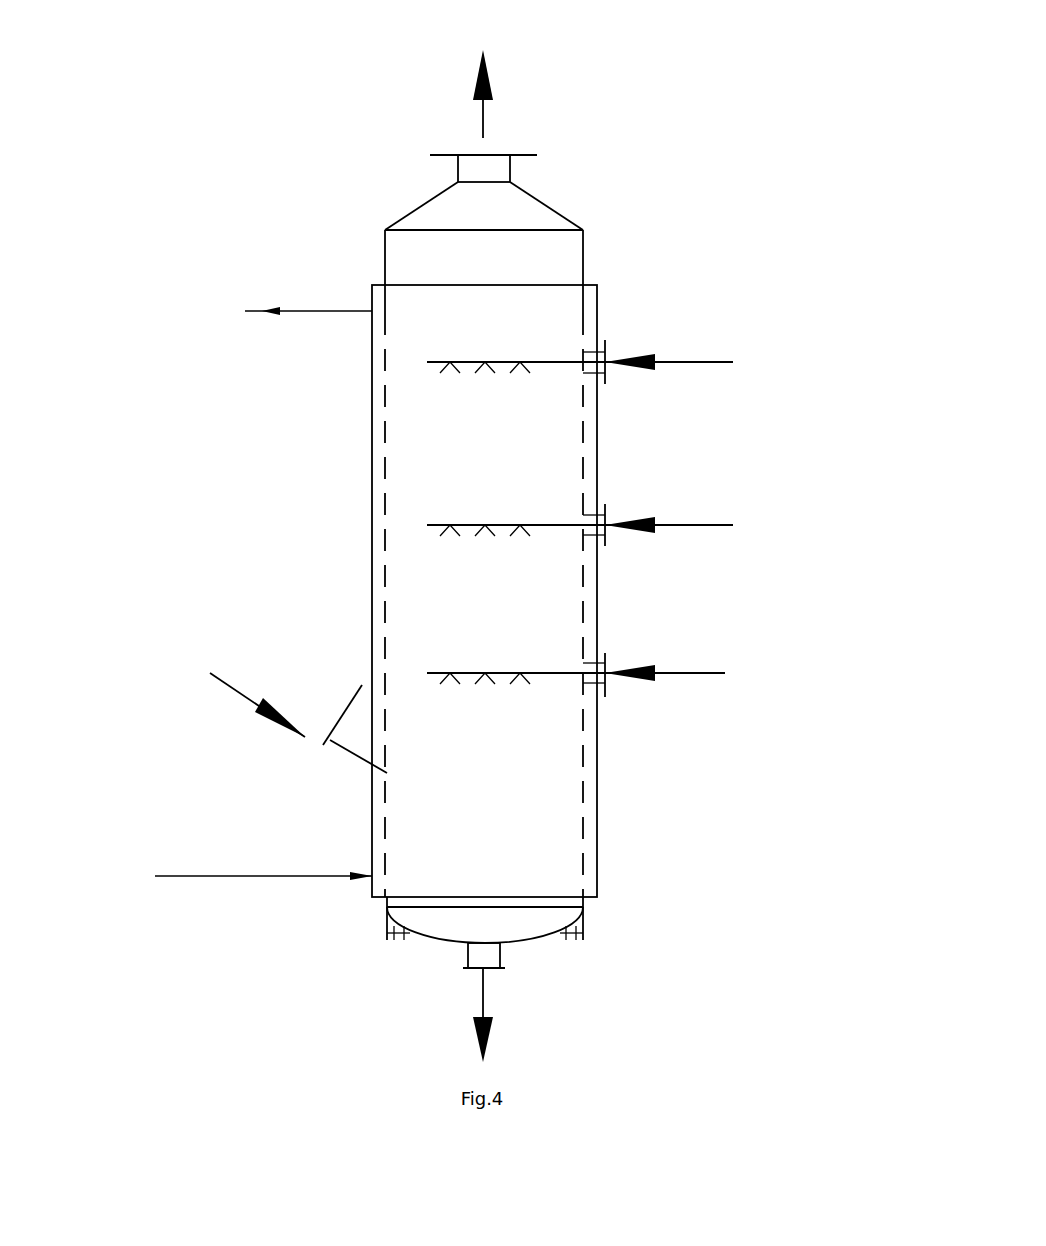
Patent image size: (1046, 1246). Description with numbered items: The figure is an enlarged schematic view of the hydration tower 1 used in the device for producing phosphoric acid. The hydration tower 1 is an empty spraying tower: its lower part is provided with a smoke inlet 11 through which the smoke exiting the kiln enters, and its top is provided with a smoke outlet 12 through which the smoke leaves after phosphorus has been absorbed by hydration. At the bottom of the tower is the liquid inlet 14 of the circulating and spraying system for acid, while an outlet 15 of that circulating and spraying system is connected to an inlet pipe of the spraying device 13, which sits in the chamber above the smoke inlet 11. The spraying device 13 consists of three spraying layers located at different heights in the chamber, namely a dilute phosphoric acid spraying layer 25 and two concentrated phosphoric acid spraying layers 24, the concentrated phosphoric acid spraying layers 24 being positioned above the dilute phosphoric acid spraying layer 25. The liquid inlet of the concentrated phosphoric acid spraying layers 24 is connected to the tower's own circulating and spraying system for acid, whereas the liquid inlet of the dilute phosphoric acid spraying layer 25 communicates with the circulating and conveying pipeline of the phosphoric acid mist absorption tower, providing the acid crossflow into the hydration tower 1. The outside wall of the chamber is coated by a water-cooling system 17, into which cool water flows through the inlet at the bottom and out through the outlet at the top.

The hydration tower 1 is at (399, 562).
The smoke inlet 11 is at (264, 662).
The smoke outlet 12 is at (412, 94).
The spraying device 13 is at (580, 233).
The liquid inlet 14 is at (361, 984).
The outlet of the circulating and spraying system for acid 15 is at (659, 302).
The water-cooling system 17 is at (376, 577).
The concentrated phosphoric acid spraying layers 24 is at (623, 454).
The dilute phosphoric acid spraying layer 25 is at (623, 621).